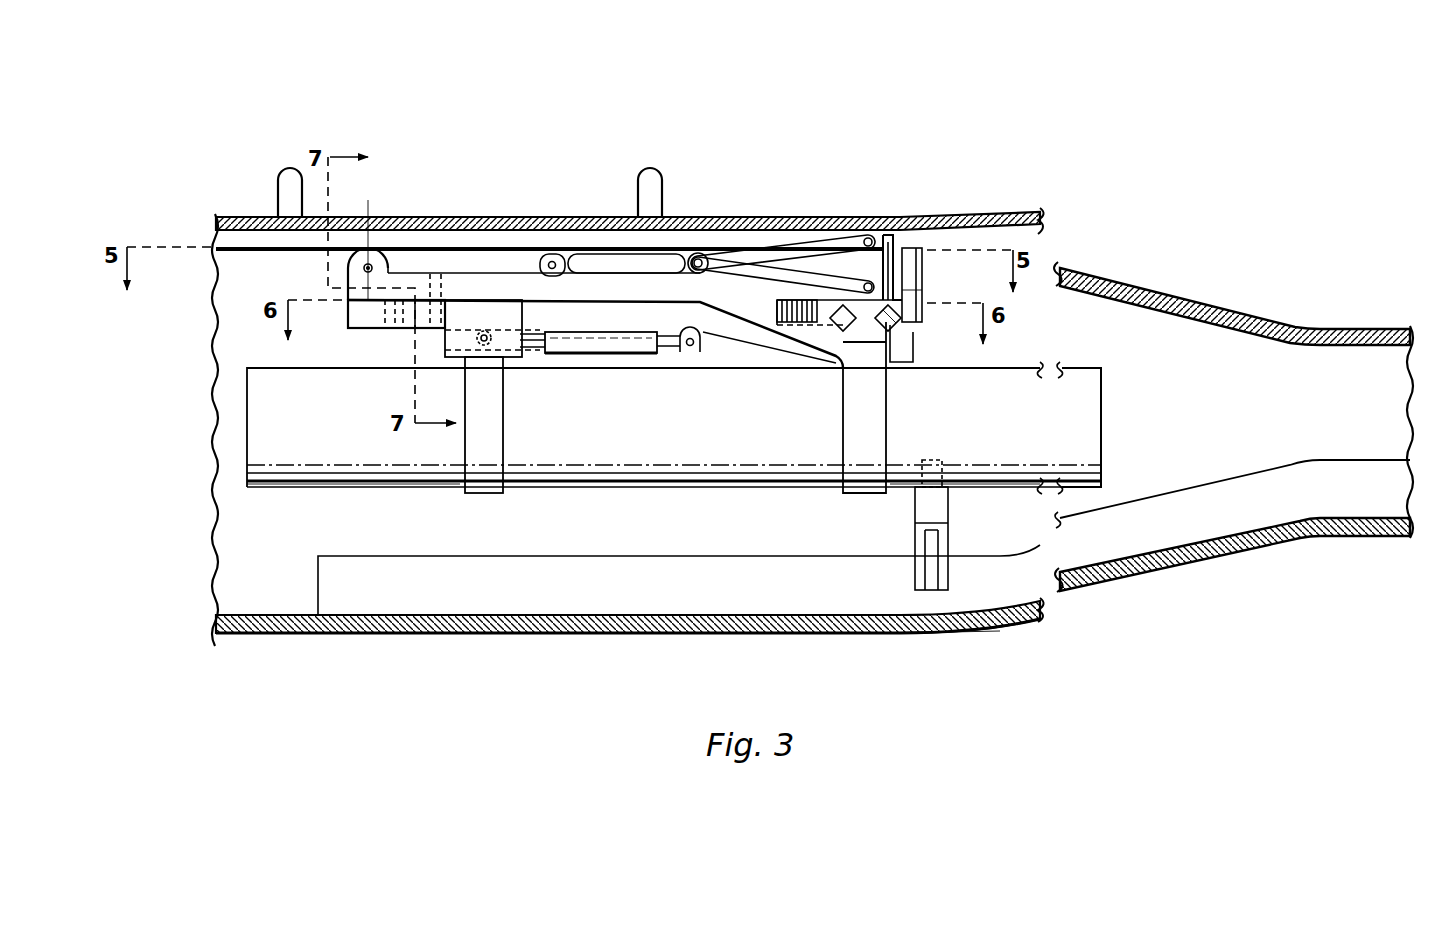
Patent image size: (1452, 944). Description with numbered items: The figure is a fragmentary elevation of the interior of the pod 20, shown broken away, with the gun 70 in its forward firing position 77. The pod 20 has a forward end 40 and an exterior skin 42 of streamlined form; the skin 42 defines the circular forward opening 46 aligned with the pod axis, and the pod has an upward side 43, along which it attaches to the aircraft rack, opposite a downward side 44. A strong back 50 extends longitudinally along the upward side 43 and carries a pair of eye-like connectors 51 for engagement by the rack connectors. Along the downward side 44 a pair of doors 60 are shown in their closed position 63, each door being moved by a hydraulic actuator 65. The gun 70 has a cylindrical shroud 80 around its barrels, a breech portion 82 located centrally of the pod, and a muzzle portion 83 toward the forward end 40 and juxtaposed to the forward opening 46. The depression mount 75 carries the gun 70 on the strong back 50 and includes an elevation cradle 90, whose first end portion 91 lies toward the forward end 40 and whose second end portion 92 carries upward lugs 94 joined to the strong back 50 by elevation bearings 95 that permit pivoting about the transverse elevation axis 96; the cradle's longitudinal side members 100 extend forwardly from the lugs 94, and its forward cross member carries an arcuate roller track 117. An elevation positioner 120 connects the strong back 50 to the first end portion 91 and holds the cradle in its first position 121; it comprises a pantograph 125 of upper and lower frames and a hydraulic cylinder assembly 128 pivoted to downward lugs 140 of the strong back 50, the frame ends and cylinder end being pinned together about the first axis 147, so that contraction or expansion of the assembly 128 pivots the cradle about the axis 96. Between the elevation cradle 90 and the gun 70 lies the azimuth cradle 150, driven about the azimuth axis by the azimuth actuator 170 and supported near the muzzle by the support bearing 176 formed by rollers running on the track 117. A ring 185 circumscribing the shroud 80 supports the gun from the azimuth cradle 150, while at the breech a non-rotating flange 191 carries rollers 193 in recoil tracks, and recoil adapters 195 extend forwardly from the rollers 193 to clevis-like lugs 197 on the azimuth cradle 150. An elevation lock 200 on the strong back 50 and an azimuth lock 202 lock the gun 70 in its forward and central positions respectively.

The pod 20 is at (882, 71).
The forward end 40 is at (1362, 325).
The exterior skin 42 is at (1024, 217).
The upward side 43 is at (808, 247).
The downward side 44 is at (257, 634).
The forward opening 46 is at (1406, 417).
The strong back 50 is at (454, 239).
The eye-like connectors 51 is at (277, 187).
The doors 60 is at (1033, 624).
The closed position 63 is at (951, 632).
The hydraulic actuator 65 is at (950, 528).
The gun 70 is at (1075, 363).
The depression mount 75 is at (1034, 313).
The forward firing position 77 is at (1101, 429).
The shroud 80 is at (673, 427).
The breech portion 82 is at (323, 488).
The muzzle portion 83 is at (1034, 489).
The elevation cradle 90 is at (344, 304).
The first end portion 91 is at (895, 273).
The second end portion 92 is at (348, 290).
The lugs 94 is at (348, 268).
The elevation bearings 95 is at (388, 264).
The elevation axis 96 is at (373, 245).
The side members 100 is at (486, 265).
The roller track 117 is at (901, 319).
The elevation positioner 120 is at (610, 371).
The first position 121 is at (923, 291).
The pantograph 125 is at (848, 243).
The hydraulic cylinder assembly 128 is at (593, 252).
The lugs 140 is at (549, 252).
The first axis 147 is at (706, 252).
The azimuth cradle 150 is at (360, 328).
The azimuth actuator 170 is at (747, 354).
The support bearing 176 is at (897, 330).
The ring 185 is at (843, 493).
The flange 191 is at (504, 386).
The roller 193 is at (445, 340).
The recoil adapters 195 is at (597, 370).
The clevis-like lugs 197 is at (690, 355).
The elevation lock 200 is at (885, 241).
The azimuth lock 202 is at (925, 267).